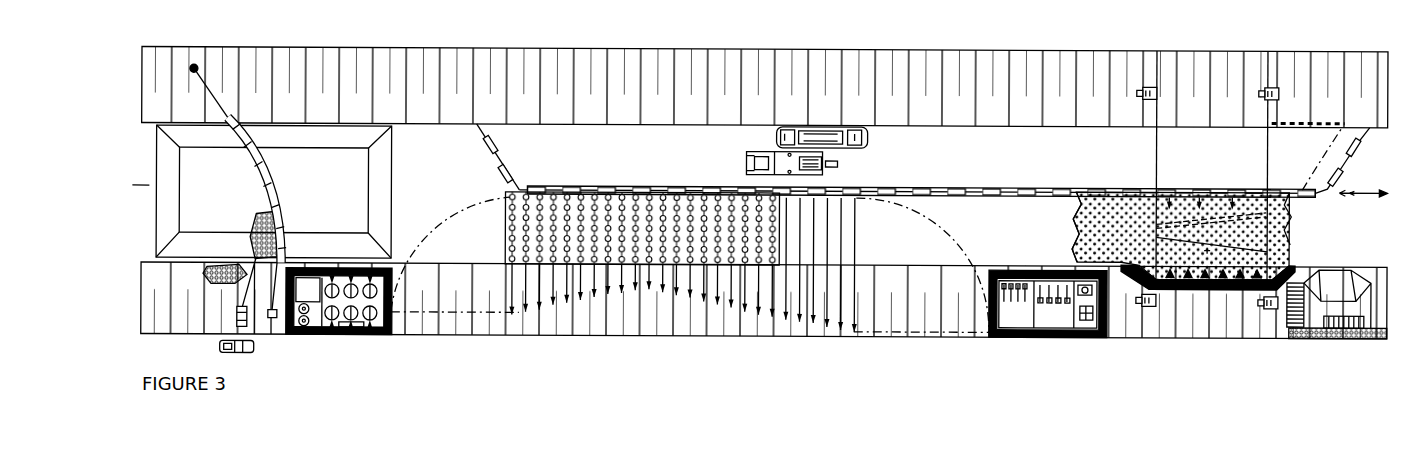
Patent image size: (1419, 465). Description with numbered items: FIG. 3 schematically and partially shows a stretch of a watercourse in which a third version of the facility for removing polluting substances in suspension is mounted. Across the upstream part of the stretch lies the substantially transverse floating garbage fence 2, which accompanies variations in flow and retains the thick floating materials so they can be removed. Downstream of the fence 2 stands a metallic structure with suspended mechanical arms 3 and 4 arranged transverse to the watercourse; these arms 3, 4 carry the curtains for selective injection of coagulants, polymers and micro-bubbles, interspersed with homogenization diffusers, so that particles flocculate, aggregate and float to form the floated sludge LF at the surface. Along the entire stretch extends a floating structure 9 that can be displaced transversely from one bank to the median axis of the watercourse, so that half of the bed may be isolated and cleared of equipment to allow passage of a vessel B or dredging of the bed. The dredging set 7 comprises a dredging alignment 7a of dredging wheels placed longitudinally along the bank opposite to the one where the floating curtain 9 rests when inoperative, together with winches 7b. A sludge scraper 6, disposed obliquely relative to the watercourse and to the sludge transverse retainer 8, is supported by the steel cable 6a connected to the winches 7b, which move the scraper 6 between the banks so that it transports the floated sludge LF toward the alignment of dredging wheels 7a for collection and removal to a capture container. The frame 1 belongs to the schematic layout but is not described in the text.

The raw material store / frame 1 is at (187, 193).
The floating garbage fence 2 is at (269, 174).
The mechanical arm 3 is at (662, 320).
The mechanical arm 4 is at (765, 322).
The sludge scraper 6 is at (1208, 242).
The steel cable 6a is at (1157, 148).
The dredging structure 7 is at (1272, 249).
The dredging alignment 7a is at (1217, 286).
The winches 7b is at (1148, 80).
The sludge transverse retainer 8 is at (1291, 219).
The floating structure 9 is at (1203, 183).
The vessel B is at (870, 143).
The floated sludge LF is at (1070, 234).